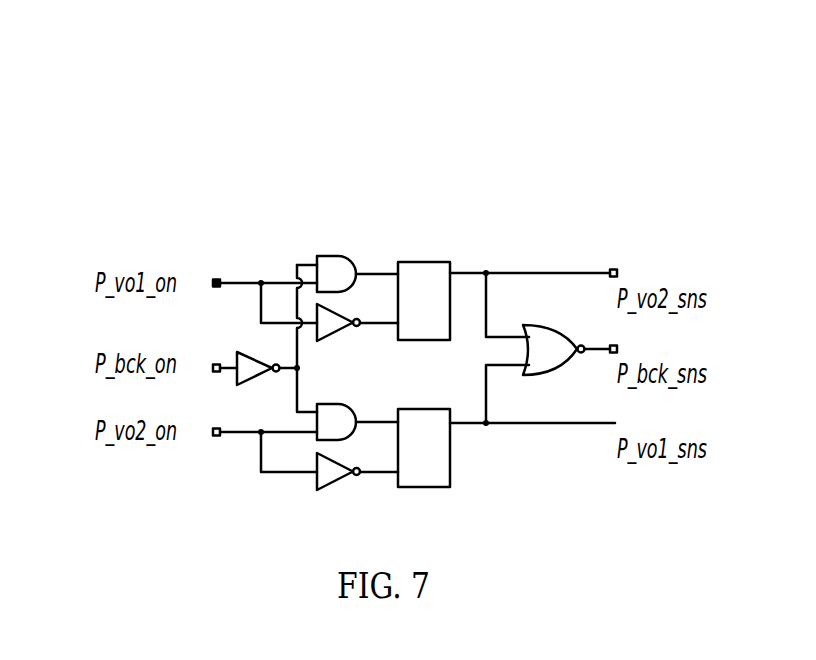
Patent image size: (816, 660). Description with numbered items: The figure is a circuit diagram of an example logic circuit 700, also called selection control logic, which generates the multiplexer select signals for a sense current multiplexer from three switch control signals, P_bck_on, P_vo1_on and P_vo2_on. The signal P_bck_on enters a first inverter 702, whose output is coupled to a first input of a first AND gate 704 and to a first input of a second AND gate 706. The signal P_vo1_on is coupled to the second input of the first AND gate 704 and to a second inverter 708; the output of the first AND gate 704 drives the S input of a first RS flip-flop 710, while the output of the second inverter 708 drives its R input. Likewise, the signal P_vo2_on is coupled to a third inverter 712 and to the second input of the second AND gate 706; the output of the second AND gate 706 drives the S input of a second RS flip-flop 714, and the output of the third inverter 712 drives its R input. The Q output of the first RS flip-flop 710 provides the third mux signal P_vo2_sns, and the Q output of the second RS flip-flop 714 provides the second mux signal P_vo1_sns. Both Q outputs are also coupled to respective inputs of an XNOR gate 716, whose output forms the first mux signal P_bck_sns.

The logic circuit 700 is at (146, 122).
The first inverter 702 is at (240, 354).
The first AND gate 704 is at (333, 257).
The second AND gate 706 is at (328, 405).
The second inverter 708 is at (338, 305).
The first RS flip-flop 710 is at (420, 262).
The third inverter 712 is at (335, 458).
The second RS flip-flop 714 is at (422, 410).
The XNOR gate 716 is at (543, 325).